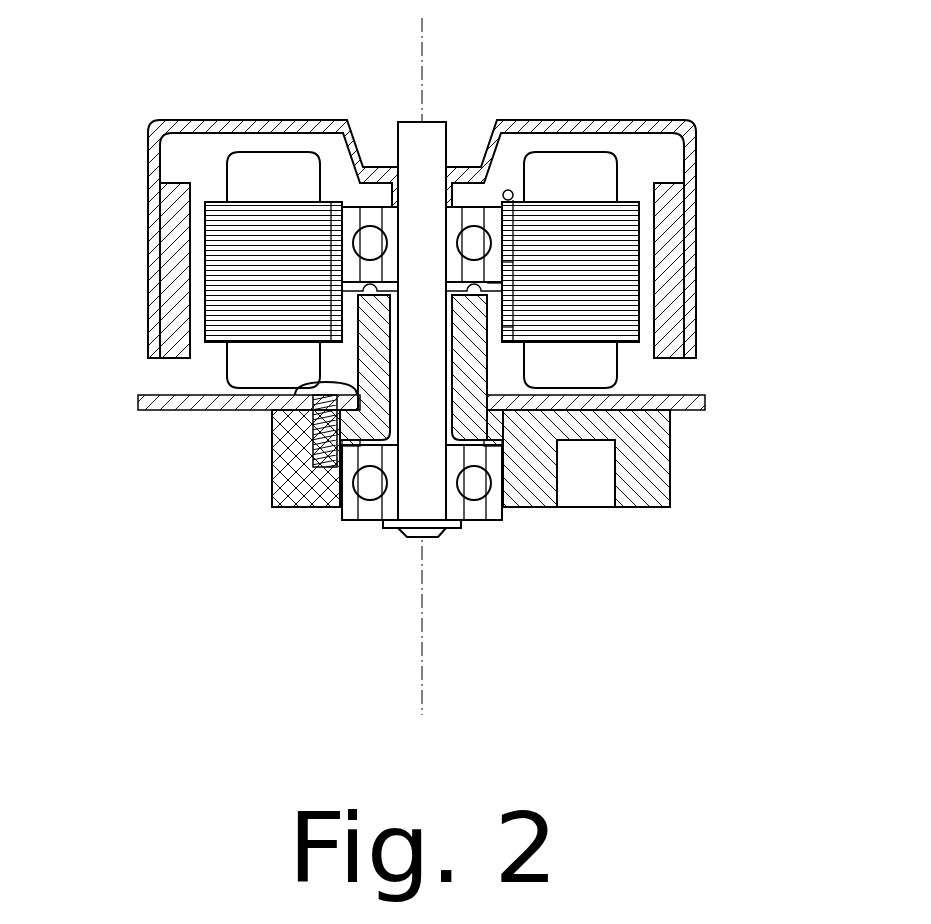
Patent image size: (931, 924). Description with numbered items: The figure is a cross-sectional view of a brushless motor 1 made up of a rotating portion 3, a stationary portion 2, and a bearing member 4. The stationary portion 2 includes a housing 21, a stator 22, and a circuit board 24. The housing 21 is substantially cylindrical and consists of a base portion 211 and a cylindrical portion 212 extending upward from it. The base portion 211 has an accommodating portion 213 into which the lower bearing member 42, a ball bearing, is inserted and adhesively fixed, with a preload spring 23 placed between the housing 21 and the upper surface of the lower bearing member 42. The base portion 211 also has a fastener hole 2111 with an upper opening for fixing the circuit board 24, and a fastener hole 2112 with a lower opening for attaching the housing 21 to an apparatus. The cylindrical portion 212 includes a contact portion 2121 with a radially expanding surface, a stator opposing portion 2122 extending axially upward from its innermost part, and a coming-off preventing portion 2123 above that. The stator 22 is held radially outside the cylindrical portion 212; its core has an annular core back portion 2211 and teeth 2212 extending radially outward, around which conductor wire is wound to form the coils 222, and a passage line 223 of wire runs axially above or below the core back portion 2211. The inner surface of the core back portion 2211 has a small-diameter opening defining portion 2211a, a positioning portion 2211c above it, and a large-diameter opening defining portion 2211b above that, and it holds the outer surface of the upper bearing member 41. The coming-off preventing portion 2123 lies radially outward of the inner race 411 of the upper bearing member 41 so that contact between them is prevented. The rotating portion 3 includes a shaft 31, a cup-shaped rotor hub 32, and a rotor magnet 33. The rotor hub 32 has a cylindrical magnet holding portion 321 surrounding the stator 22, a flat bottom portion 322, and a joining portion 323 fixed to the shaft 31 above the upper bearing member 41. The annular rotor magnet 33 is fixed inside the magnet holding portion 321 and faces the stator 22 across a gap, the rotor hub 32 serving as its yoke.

The brushless motor 1 is at (47, 35).
The stationary portion 2 is at (180, 627).
The rotating portion 3 is at (205, 93).
The bearing member 4 is at (477, 213).
The housing 21 is at (322, 497).
The base portion 211 is at (277, 487).
The fastener hole 2111 is at (290, 492).
The fastener hole 2112 is at (590, 478).
The cylindrical portion 212 is at (472, 397).
The contact portion 2121 is at (470, 343).
The stator opposing portion 2122 is at (472, 327).
The coming-off preventing portion 2123 is at (343, 257).
The accommodating portion 213 is at (517, 497).
The stator 22 is at (215, 343).
The core back portion 2211 is at (350, 290).
The small-diameter opening defining portion 2211a is at (503, 327).
The large-diameter opening defining portion 2211b is at (507, 262).
The positioning portion 2211c is at (493, 283).
The teeth 2212 is at (230, 335).
The coils 222 is at (263, 377).
The passage line 223 is at (510, 191).
The preload spring 23 is at (350, 482).
The circuit board 24 is at (167, 405).
The shaft 31 is at (403, 537).
The rotor hub 32 is at (660, 127).
The magnet holding portion 321 is at (152, 178).
The bottom portion 322 is at (283, 128).
The joining portion 323 is at (392, 185).
The rotor magnet 33 is at (667, 215).
The upper bearing member 41 is at (367, 213).
The inner race 411 is at (455, 217).
The lower bearing member 42 is at (462, 520).